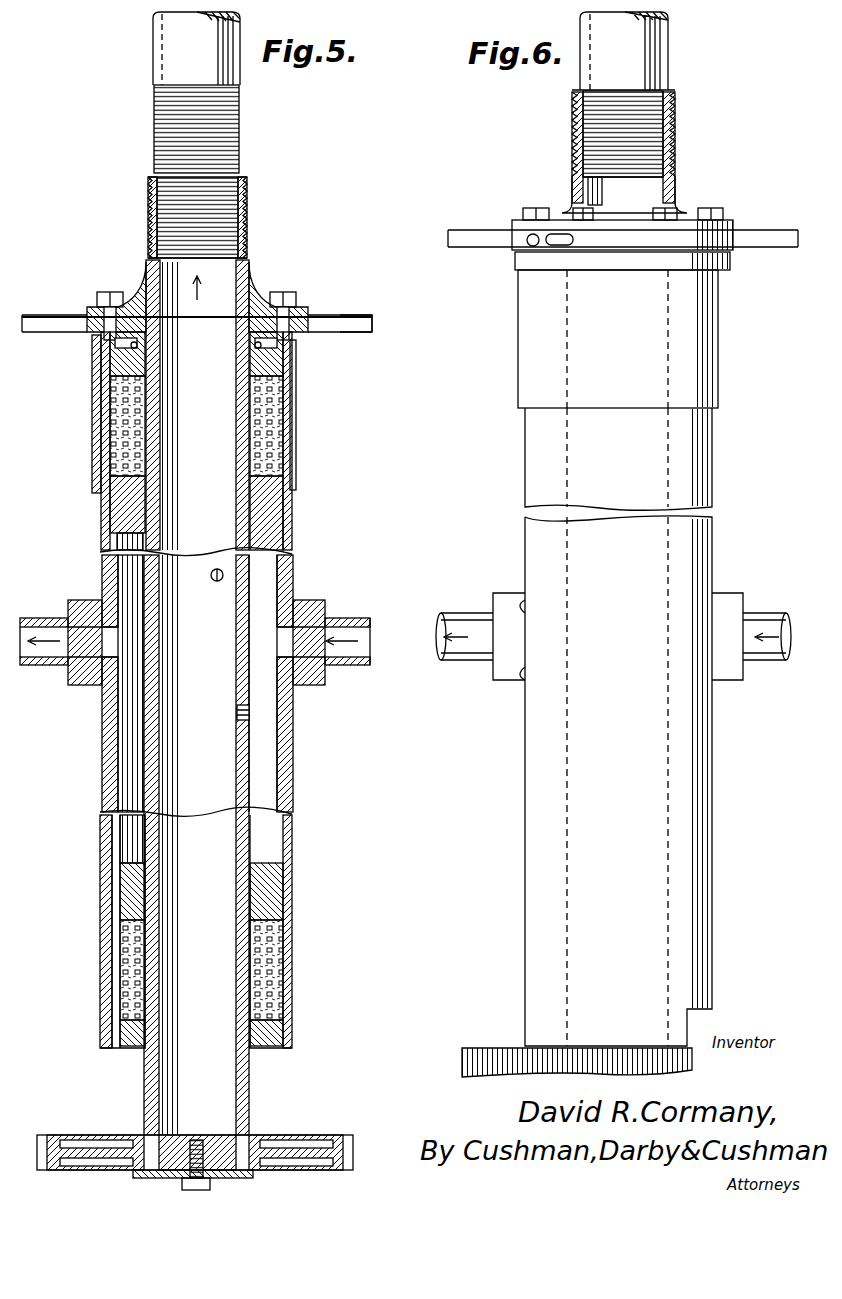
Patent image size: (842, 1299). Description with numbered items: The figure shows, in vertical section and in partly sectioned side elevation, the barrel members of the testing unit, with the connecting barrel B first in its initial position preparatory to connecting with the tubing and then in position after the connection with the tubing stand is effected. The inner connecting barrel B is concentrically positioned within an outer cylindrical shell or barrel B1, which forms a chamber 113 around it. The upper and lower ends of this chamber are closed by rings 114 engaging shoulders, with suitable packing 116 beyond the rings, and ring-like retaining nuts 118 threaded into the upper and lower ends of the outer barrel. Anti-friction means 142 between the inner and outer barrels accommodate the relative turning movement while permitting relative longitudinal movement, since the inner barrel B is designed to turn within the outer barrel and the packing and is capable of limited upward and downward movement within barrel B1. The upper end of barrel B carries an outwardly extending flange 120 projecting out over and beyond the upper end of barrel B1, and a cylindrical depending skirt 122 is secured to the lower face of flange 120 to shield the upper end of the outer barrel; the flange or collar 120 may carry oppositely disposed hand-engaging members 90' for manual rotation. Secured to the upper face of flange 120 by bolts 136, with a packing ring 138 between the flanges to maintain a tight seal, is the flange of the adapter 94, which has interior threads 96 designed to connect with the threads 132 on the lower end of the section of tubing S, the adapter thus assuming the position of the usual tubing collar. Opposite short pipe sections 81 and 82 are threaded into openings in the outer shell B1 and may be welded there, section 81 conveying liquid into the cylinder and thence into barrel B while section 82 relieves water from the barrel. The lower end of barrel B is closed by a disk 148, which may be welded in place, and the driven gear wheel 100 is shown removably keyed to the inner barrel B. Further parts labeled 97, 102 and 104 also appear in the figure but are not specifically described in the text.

In FIG. 5, the pipe stand S is at (166, 36).
In FIG. 6, the pipe stand S is at (660, 60).
In FIG. 5, the threads 132 is at (242, 138).
In FIG. 5, the interior threads 96 is at (150, 192).
In FIG. 5, the internal threads of coupling 97 is at (249, 208).
In FIG. 5, the bolts 136 is at (118, 306).
In FIG. 5, the adapter 94 is at (253, 285).
In FIG. 6, the adapter 94 is at (680, 197).
In FIG. 5, the packing ring 138 is at (282, 318).
In FIG. 5, the flange 120 is at (300, 330).
In FIG. 6, the flange 120 is at (732, 228).
In FIG. 5, the hand-engaging members 90' is at (391, 316).
In FIG. 6, the hand-engaging members 90' is at (605, 224).
In FIG. 5, the anti-friction means 142 is at (118, 352).
In FIG. 5, the retaining ring-like nuts 118 is at (290, 368).
In FIG. 5, the cylindrical depending skirt 122 is at (297, 408).
In FIG. 6, the cylindrical depending skirt 122 is at (531, 316).
In FIG. 5, the packing 116 is at (281, 455).
In FIG. 5, the rings 114 is at (291, 520).
In FIG. 5, the port / opening 104 is at (224, 577).
In FIG. 5, the outlet flange boss 102 is at (318, 609).
In FIG. 5, the pipe section 82 is at (43, 622).
In FIG. 6, the pipe section 82 is at (470, 622).
In FIG. 5, the pipe section 81 is at (346, 668).
In FIG. 6, the pipe section 81 is at (781, 622).
In FIG. 5, the chamber 113 is at (262, 766).
In FIG. 5, the outer cylindrical barrel B1 is at (105, 760).
In FIG. 6, the outer cylindrical barrel B1 is at (713, 809).
In FIG. 5, the connecting barrel B is at (145, 1075).
In FIG. 5, the disk 148 is at (233, 1142).
In FIG. 5, the driven gear wheel 100 is at (335, 1142).
In FIG. 6, the driven gear wheel 100 is at (482, 1048).